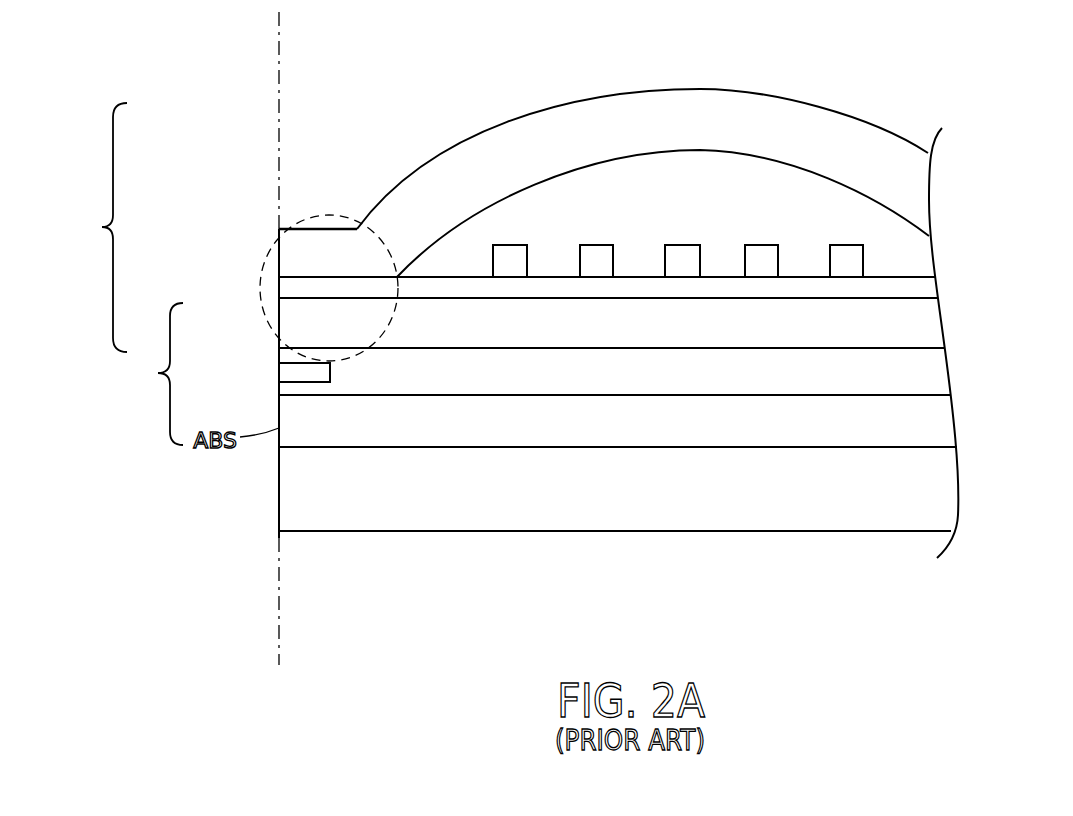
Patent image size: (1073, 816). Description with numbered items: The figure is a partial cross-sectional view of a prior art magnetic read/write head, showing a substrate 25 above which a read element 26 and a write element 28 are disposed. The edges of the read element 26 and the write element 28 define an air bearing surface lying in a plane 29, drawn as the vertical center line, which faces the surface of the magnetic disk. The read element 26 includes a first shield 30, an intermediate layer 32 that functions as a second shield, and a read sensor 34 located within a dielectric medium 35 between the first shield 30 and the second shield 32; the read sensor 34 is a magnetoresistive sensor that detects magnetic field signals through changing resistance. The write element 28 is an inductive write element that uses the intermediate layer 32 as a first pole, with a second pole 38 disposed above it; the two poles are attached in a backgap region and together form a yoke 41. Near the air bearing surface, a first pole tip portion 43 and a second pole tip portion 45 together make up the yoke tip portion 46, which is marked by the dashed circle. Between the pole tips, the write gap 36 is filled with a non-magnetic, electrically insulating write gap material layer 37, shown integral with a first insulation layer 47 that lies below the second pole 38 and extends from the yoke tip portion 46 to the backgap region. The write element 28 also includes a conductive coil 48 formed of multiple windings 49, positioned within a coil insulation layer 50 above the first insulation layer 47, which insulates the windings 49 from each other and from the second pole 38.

The substrate 25 is at (940, 482).
The read element 26 is at (154, 374).
The write element 28 is at (99, 227).
The plane 29 is at (279, 97).
The first shield 30 is at (940, 416).
The intermediate layer 32 is at (930, 323).
The read sensor 34 is at (310, 372).
The dielectric medium 35 is at (935, 367).
The write gap 36 is at (294, 286).
The write gap material layer 37 is at (296, 322).
The second pole 38 is at (707, 108).
The yoke 41 is at (878, 106).
The first pole tip portion 43 is at (290, 350).
The second pole tip portion 45 is at (296, 253).
The yoke tip portion 46 is at (330, 213).
The first insulation layer 47 is at (926, 291).
The conductive coil 48 is at (710, 248).
The windings 49 is at (848, 262).
The coil insulation layer 50 is at (640, 176).